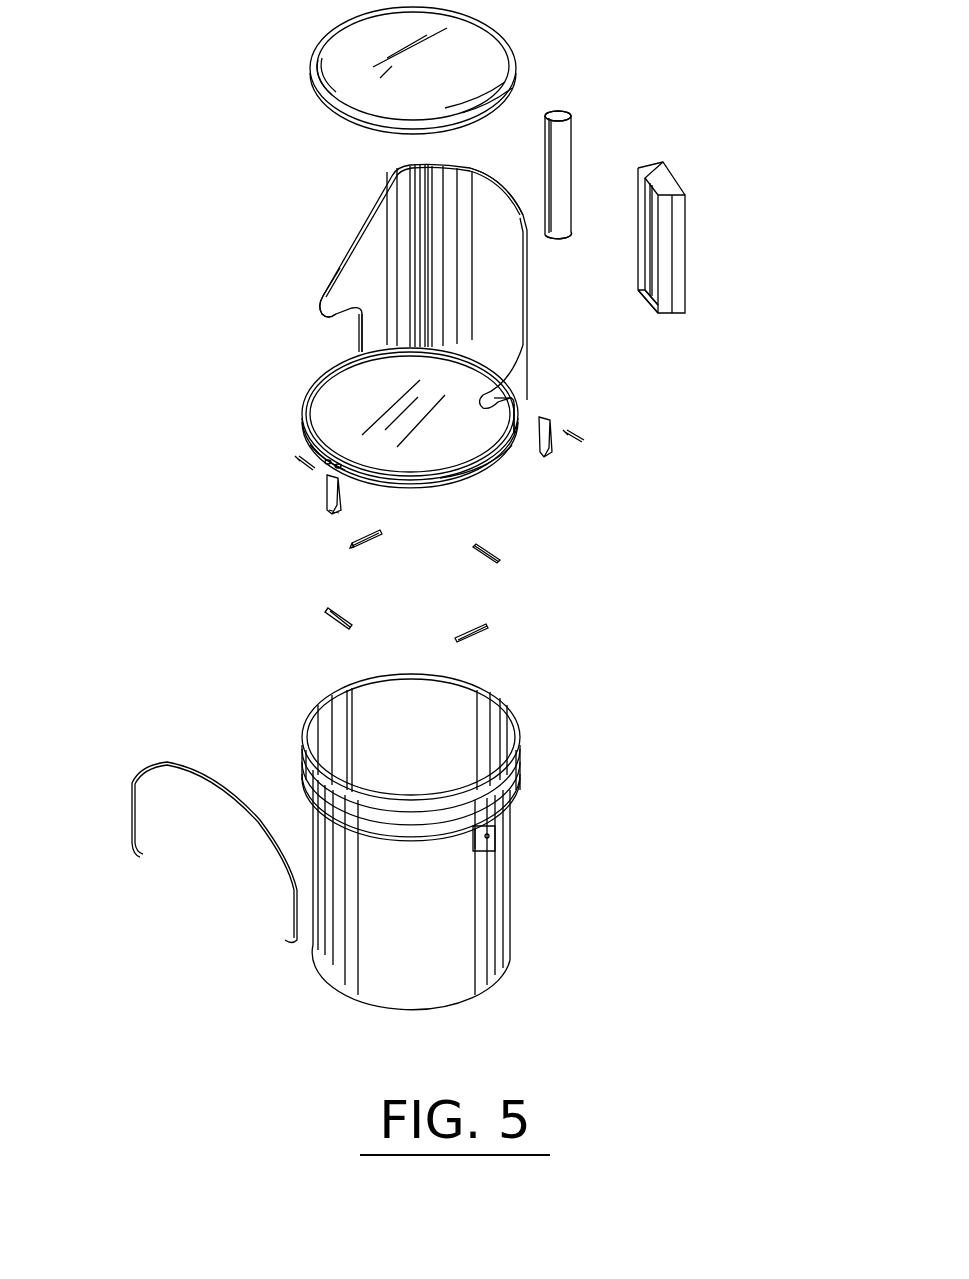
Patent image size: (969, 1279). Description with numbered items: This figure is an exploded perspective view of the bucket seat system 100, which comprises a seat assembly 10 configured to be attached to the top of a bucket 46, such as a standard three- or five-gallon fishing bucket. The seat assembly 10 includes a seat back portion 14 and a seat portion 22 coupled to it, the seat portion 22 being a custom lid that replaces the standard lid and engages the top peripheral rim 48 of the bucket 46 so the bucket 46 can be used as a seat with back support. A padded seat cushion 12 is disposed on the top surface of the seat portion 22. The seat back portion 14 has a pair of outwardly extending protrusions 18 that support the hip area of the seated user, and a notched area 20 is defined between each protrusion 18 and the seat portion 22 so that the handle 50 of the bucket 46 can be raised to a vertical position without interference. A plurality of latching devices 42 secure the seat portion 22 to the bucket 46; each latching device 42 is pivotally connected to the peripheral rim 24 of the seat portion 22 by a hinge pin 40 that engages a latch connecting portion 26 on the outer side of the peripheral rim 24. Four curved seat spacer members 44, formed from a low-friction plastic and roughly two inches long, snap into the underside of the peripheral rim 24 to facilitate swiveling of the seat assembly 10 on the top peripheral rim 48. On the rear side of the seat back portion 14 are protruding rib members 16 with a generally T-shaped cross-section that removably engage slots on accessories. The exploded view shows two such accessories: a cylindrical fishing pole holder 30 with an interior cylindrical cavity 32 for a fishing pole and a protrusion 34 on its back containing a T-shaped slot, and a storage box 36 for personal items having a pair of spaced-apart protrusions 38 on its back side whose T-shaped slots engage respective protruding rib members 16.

The seat assembly 10 is at (186, 38).
The seat cushion 12 is at (457, 22).
The seat back portion 14 is at (380, 205).
The protruding rib members 16 is at (486, 165).
The outwardly extending protrusions 18 is at (337, 297).
The notched area 20 is at (347, 333).
The seat portion 22 is at (497, 458).
The peripheral rim 24 is at (305, 410).
The latch connecting portion 26 is at (327, 462).
The fishing pole holder 30 is at (570, 134).
The interior cylindrical cavity 32 is at (563, 113).
The protrusion 34 is at (545, 240).
The storage box 36 is at (670, 193).
The spaced-apart protrusions 38 is at (642, 298).
The hinge pin 40 is at (303, 460).
The latching devices 42 is at (327, 497).
The curved seat spacer members 44 is at (340, 610).
The bucket 46 is at (510, 878).
The top peripheral rim 48 is at (520, 727).
The handle 50 is at (140, 775).
The bucket seat system 100 is at (268, 1055).